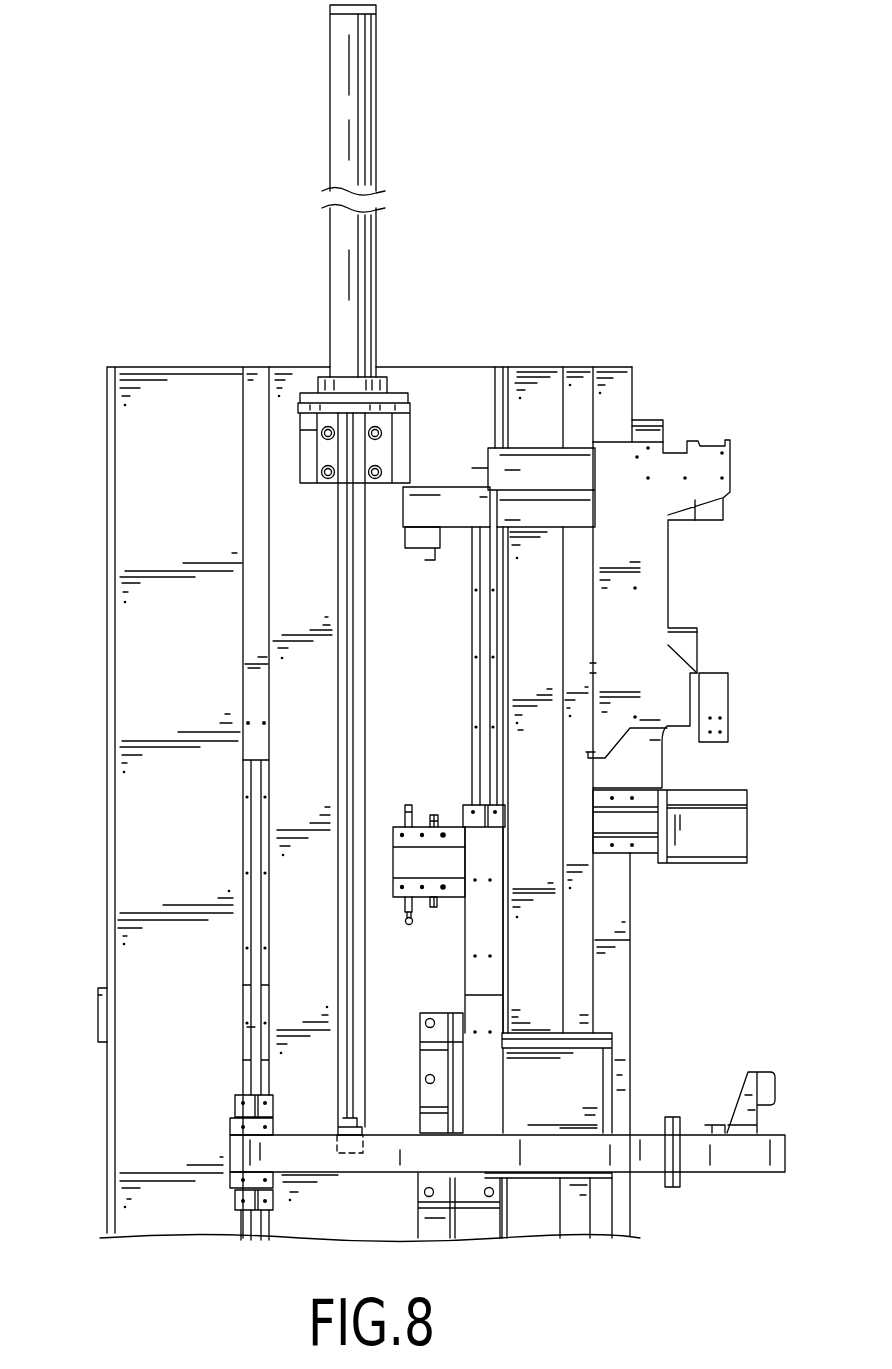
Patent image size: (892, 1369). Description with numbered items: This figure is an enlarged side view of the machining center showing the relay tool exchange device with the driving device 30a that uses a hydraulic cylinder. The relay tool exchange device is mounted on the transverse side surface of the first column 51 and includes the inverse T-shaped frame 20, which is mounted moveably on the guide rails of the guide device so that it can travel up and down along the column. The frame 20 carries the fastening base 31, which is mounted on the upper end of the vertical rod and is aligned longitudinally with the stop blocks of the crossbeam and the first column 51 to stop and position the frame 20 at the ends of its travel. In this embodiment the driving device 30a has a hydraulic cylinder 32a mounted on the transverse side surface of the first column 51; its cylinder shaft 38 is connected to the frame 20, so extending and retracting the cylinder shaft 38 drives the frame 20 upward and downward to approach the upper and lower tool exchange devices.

The first column 51 is at (207, 361).
The driving device 30a is at (390, 310).
The hydraulic cylinder 32a is at (291, 470).
The cylinder shaft 38 is at (355, 668).
The fastening base 31 is at (453, 867).
The frame 20 is at (222, 1139).